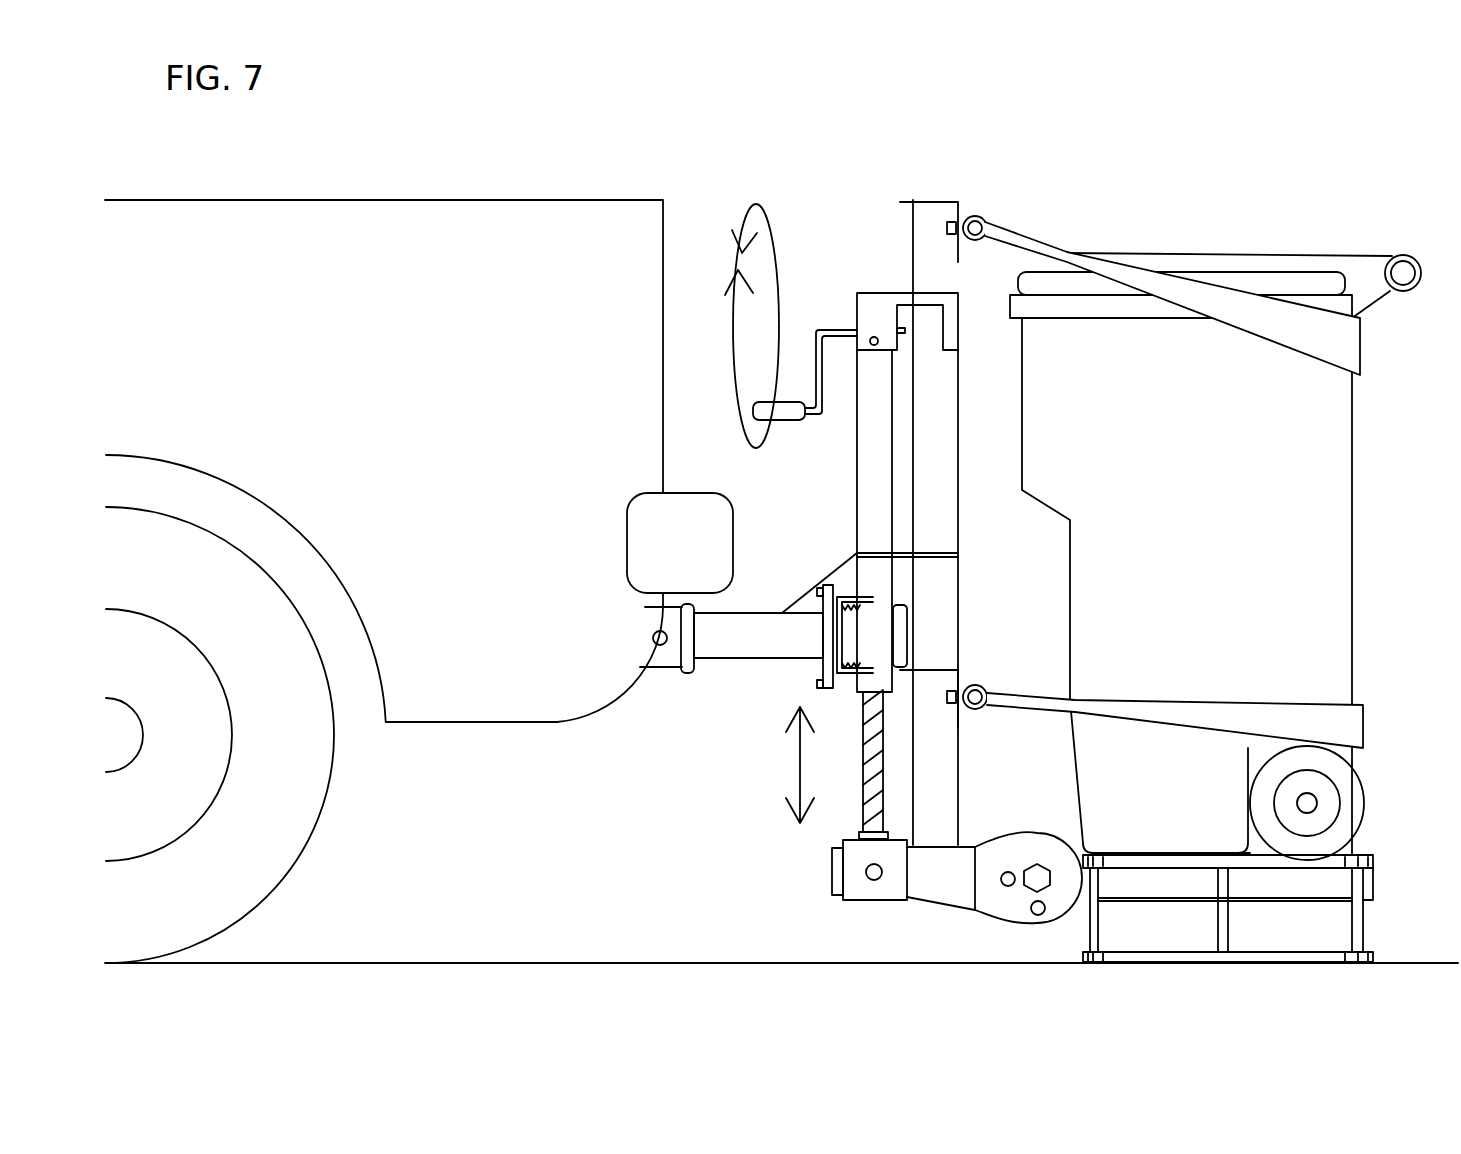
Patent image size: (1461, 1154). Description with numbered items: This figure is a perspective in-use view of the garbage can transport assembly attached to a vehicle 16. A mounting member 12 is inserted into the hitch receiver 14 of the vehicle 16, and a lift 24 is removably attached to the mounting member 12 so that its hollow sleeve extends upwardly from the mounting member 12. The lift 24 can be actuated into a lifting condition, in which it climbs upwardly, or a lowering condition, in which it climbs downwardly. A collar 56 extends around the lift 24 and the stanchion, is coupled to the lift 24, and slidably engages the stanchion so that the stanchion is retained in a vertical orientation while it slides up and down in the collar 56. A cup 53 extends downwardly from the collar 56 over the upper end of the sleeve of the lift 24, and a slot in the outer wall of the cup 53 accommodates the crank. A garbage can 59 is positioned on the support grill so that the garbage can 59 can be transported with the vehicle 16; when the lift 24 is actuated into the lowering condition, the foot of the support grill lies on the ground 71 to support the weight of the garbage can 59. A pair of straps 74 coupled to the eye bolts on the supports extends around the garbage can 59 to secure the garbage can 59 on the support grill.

The vehicle 16 is at (612, 200).
The hitch receiver 14 is at (655, 670).
The mounting member 12 is at (740, 660).
The lift 24 is at (857, 368).
The cup 53 is at (885, 352).
The collar 56 is at (895, 293).
The garbage can 59 is at (957, 307).
The ground 71 is at (1408, 962).
The straps 74 is at (1362, 345).